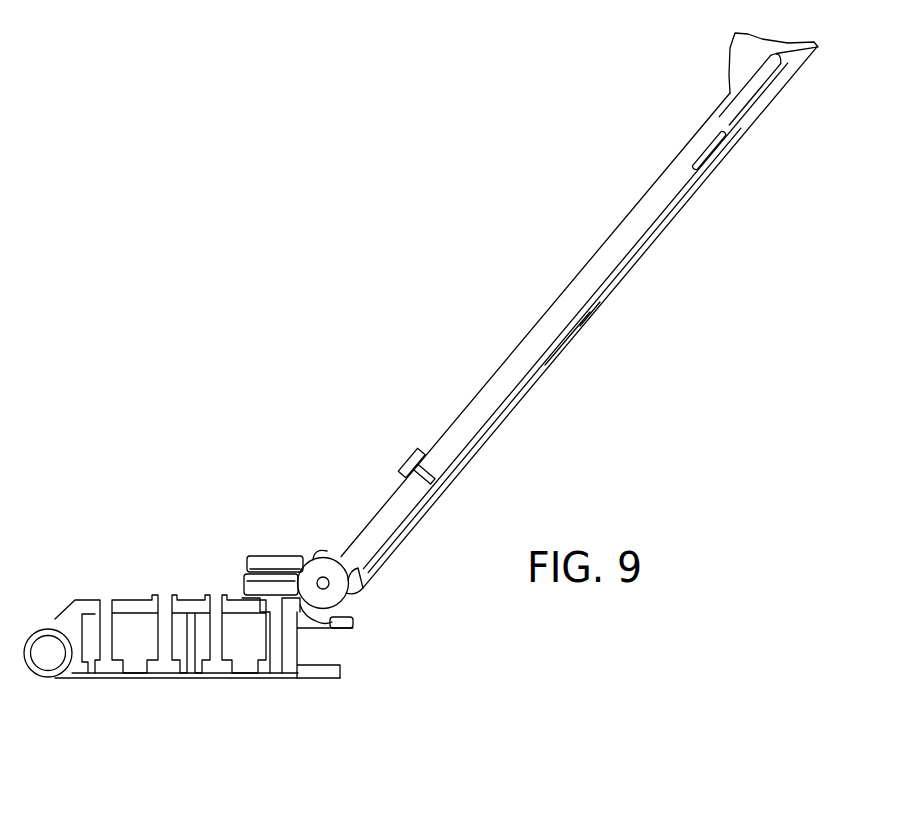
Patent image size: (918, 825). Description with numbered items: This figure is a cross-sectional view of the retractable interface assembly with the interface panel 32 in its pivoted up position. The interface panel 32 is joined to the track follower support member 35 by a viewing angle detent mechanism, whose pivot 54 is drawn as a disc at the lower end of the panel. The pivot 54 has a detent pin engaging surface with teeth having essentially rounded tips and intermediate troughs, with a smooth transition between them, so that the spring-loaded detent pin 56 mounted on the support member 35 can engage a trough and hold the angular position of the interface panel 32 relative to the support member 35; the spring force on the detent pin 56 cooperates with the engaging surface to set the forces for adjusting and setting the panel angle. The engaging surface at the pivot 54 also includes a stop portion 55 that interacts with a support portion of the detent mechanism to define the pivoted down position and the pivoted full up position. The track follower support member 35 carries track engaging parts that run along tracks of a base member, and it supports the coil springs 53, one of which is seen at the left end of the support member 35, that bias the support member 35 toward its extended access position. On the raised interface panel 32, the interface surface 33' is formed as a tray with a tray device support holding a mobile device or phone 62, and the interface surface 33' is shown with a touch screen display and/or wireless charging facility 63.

The interface panel 32 is at (703, 190).
The interface surface 33' is at (524, 323).
The track follower support member 35 is at (143, 599).
The coil spring 53 is at (48, 632).
The pivot 54 is at (333, 565).
The stop portion 55 is at (334, 614).
The spring-loaded detent pin 56 is at (285, 575).
The mobile device/phone 62 is at (638, 224).
The touch screen display and/or wireless charging facility 63 is at (581, 326).